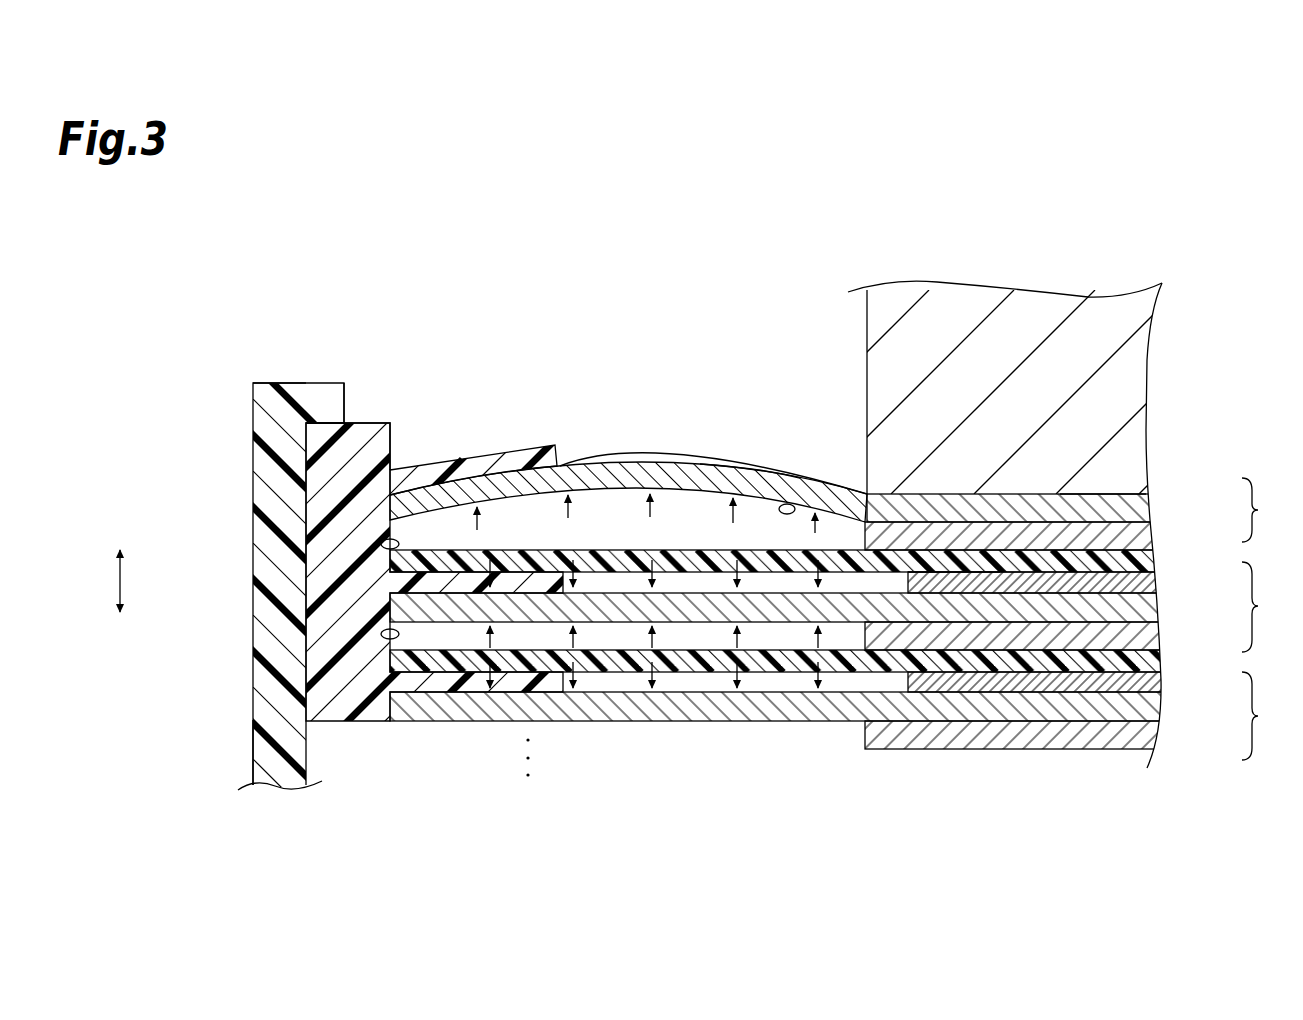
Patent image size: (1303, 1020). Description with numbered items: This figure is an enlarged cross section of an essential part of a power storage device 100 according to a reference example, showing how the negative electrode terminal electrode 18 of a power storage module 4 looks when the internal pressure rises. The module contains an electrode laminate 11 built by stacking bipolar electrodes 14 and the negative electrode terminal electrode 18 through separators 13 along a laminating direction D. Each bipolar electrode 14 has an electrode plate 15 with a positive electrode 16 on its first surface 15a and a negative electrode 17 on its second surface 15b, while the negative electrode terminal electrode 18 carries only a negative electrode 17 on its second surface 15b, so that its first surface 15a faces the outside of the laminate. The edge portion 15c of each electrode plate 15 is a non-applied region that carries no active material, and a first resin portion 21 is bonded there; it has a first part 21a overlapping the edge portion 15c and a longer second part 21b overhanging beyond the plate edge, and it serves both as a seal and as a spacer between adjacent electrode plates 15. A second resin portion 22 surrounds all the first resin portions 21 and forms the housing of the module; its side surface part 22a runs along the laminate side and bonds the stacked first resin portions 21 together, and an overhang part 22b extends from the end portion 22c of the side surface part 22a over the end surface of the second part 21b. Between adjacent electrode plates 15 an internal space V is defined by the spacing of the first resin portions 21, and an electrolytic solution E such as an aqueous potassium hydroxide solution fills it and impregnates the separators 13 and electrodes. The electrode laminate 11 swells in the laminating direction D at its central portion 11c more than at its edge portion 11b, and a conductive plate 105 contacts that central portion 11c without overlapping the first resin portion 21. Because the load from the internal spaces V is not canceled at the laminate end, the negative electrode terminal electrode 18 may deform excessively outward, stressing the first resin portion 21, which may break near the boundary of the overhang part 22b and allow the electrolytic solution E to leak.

The power storage device 100 is at (374, 320).
The power storage module 4 is at (496, 342).
The electrode laminate 11 is at (618, 400).
The edge portion 11b is at (667, 455).
The central portion 11c is at (1104, 486).
The conductive plate 105 is at (1050, 310).
The separator 13 is at (940, 574).
The bipolar electrode 14 is at (1264, 661).
The electrode plate 15 is at (1148, 517).
The first surface 15a is at (752, 475).
The second surface 15b is at (795, 512).
The edge portion 15c is at (452, 474).
The positive electrode 16 is at (1159, 583).
The negative electrode 17 is at (1150, 540).
The negative electrode terminal electrode 18 is at (1264, 510).
The first resin portion 21 is at (330, 482).
The first part 21a is at (520, 452).
The second part 21b is at (365, 436).
The second resin portion 22 is at (272, 430).
The side surface part 22a is at (283, 746).
The overhang part 22b is at (326, 394).
The end portion 22c is at (268, 396).
The internal space V is at (381, 544).
The laminating direction D is at (118, 584).
The electrolytic solution E is at (699, 535).